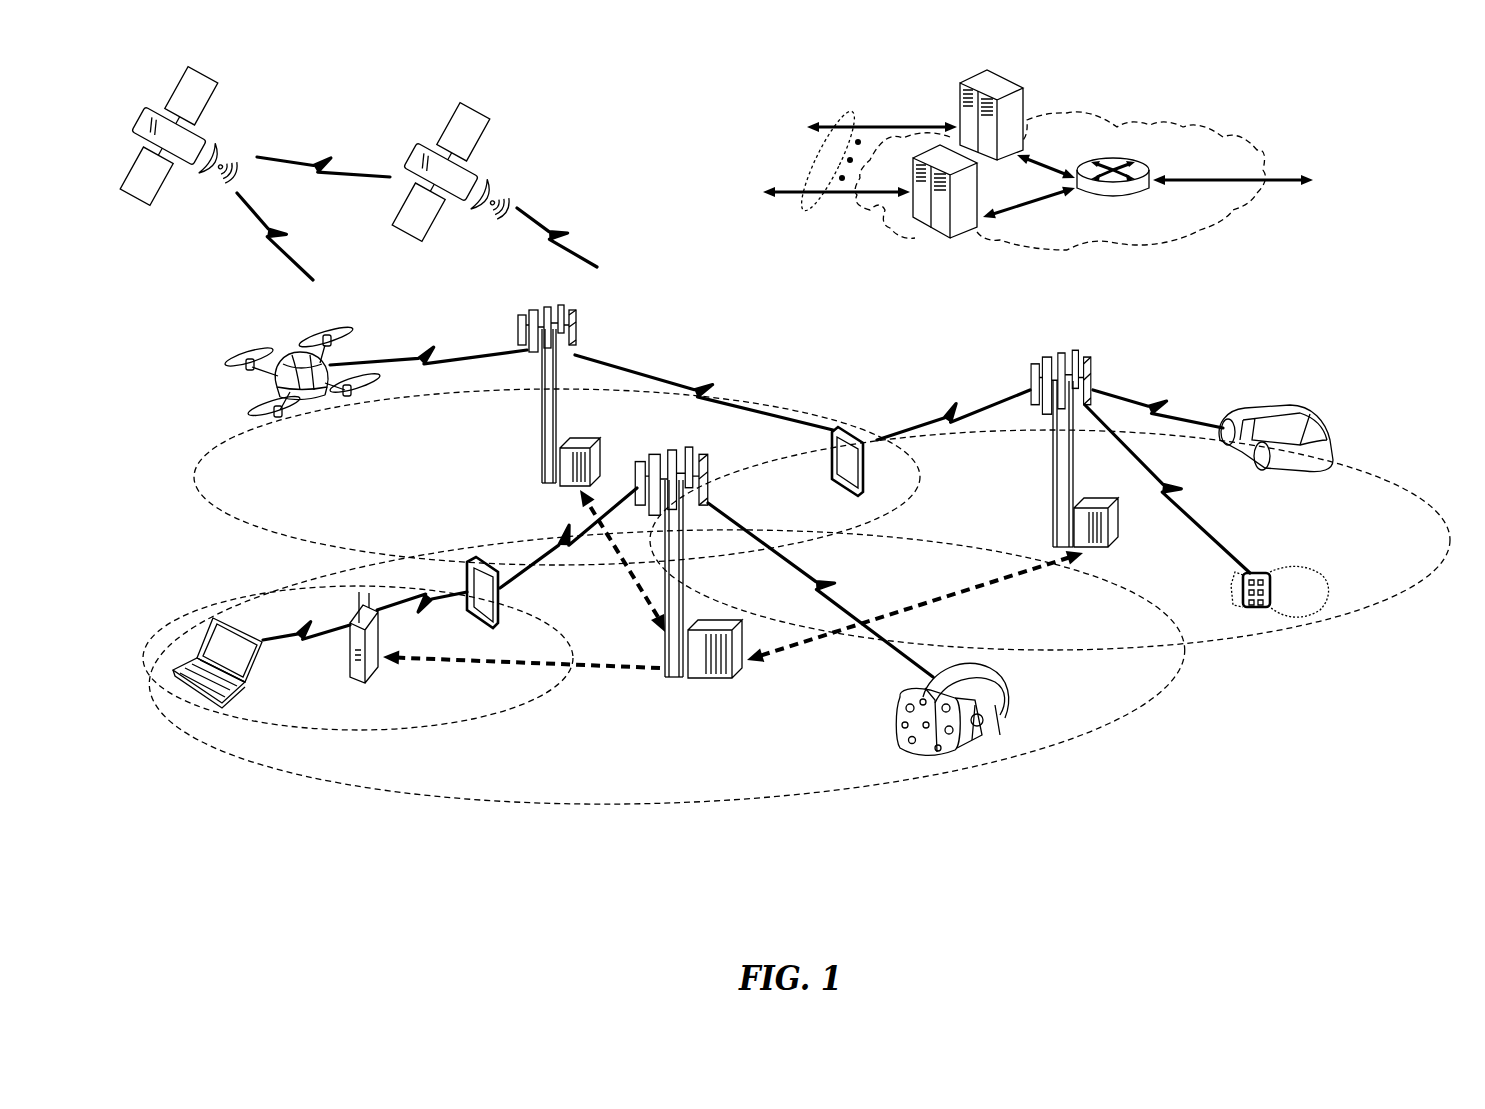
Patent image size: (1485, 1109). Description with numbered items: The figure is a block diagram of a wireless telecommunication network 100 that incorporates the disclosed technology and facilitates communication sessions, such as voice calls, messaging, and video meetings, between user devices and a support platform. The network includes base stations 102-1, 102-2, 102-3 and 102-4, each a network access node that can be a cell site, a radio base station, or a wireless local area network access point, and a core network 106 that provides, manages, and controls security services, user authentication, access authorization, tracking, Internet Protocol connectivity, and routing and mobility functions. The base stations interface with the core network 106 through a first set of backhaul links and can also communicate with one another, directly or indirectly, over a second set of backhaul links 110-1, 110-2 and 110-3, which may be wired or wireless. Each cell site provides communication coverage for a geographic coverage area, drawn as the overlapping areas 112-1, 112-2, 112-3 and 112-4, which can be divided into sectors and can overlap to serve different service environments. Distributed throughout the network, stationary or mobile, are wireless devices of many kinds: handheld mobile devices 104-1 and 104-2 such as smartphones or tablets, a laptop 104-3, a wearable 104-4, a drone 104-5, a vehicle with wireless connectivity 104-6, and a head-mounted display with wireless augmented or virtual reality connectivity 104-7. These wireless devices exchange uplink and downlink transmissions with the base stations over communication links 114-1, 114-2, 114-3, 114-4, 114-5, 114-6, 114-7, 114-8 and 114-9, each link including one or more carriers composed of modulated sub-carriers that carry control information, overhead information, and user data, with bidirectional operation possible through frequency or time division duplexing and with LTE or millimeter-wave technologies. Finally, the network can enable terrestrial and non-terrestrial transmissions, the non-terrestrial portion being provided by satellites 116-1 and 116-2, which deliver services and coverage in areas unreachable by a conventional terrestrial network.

The wireless telecommunication network 100 is at (1383, 135).
The base station 102-1 is at (677, 677).
The base station 102-2 is at (537, 433).
The base station 102-3 is at (1053, 467).
The base station 102-4 is at (348, 665).
The handheld mobile device 104-1 is at (498, 607).
The handheld mobile device 104-2 is at (830, 463).
The laptop 104-3 is at (197, 703).
The wearable 104-4 is at (1257, 570).
The drone 104-5 is at (313, 400).
The vehicle with wireless connectivity 104-6 is at (1300, 423).
The head-mounted display with wireless AR/VR connectivity 104-7 is at (1010, 693).
The core network 106 is at (1147, 243).
The backhaul link 110-1 is at (417, 662).
The backhaul link 110-2 is at (977, 590).
The backhaul link 110-3 is at (630, 585).
The geographic coverage area 112-1 is at (606, 811).
The geographic coverage area 112-2 is at (480, 717).
The geographic coverage area 112-3 is at (257, 542).
The geographic coverage area 112-4 is at (1337, 463).
The communication link 114-1 is at (877, 580).
The communication link 114-2 is at (563, 535).
The communication link 114-3 is at (273, 640).
The communication link 114-4 is at (417, 608).
The communication link 114-5 is at (423, 347).
The communication link 114-6 is at (703, 385).
The communication link 114-7 is at (952, 405).
The communication link 114-8 is at (1180, 505).
The communication link 114-9 is at (1150, 400).
The satellite 116-1 is at (210, 150).
The satellite 116-2 is at (495, 190).